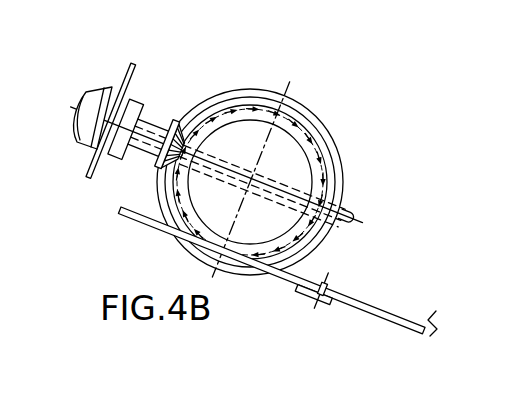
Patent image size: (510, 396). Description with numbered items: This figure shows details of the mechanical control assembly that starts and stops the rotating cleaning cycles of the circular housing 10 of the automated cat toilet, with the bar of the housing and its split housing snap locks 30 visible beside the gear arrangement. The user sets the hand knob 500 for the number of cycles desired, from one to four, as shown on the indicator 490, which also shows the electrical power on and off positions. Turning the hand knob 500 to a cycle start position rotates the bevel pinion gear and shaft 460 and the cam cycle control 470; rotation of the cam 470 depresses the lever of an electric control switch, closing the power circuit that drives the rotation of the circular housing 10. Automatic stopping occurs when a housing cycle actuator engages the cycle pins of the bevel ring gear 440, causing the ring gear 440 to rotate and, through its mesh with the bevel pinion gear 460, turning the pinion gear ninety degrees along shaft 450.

The circular housing 10 is at (387, 313).
The split housing snap locks 30 is at (327, 307).
The bevel ring gear 440 is at (313, 112).
The shaft 450 is at (352, 214).
The bevel pinion gear and shaft 460 is at (160, 168).
The cam cycle control 470 is at (140, 100).
The indicator 490 is at (132, 62).
The hand knob 500 is at (80, 128).